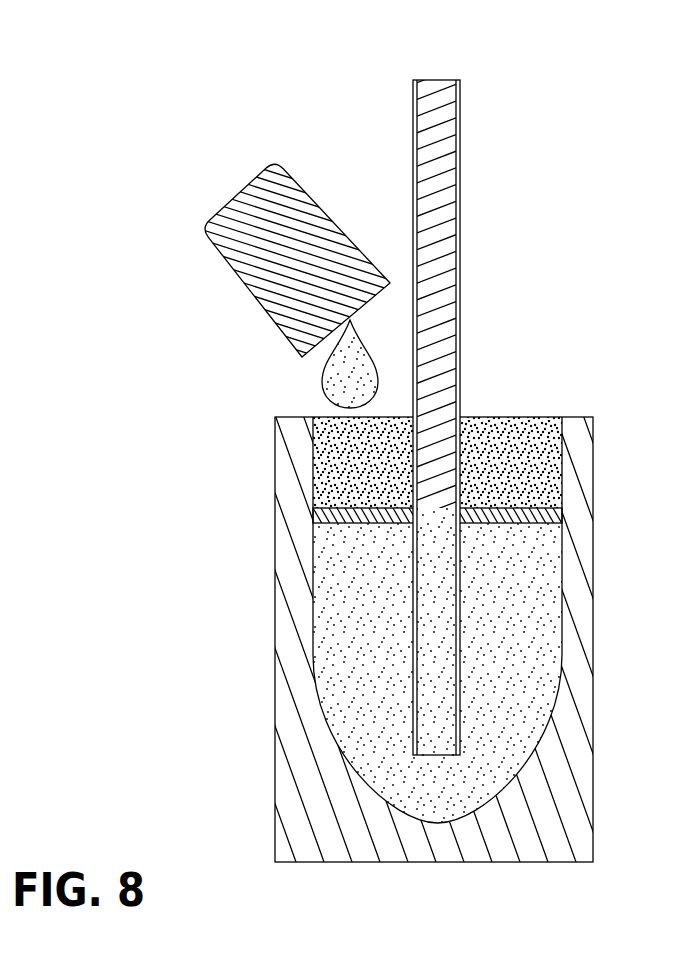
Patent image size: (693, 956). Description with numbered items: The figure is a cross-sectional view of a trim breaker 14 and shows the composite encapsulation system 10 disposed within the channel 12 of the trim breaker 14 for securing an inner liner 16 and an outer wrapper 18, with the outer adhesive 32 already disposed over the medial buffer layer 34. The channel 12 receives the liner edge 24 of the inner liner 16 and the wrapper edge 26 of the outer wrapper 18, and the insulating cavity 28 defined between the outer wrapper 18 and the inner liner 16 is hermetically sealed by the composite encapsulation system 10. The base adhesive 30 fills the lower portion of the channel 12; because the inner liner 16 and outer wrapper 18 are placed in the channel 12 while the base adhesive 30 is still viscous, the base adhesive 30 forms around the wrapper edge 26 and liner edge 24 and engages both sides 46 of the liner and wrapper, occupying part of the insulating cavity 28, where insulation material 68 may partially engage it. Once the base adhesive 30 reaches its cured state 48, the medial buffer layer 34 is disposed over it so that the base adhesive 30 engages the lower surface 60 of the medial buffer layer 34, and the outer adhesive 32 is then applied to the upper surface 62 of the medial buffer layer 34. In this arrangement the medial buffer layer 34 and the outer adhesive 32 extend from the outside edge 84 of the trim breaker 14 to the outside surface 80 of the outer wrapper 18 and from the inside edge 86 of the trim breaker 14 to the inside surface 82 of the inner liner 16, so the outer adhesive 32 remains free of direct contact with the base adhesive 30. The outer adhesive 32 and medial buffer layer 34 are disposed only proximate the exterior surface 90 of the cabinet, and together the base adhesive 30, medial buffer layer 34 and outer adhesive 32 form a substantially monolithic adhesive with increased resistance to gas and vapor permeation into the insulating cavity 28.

The composite encapsulation system 10 is at (153, 340).
The channel 12 is at (491, 408).
The trim breaker 14 is at (250, 779).
The inner liner 16 is at (460, 202).
The outer wrapper 18 is at (413, 162).
The liner edge 24 is at (455, 755).
The wrapper edge 26 is at (415, 755).
The insulating cavity 28 is at (441, 75).
The base adhesive 30 is at (362, 705).
The outer adhesive 32 is at (537, 463).
The medial buffer layer 34 is at (547, 517).
The sides 46 is at (425, 655).
The cured state 48 is at (547, 602).
The lower surface 60 is at (340, 527).
The upper surface 62 is at (347, 510).
The insulation material 68 is at (438, 283).
The outside surface 80 is at (412, 268).
The inside surface 82 is at (460, 128).
The outside edge 84 is at (290, 417).
The inside edge 86 is at (578, 417).
The exterior surface 90 is at (413, 107).